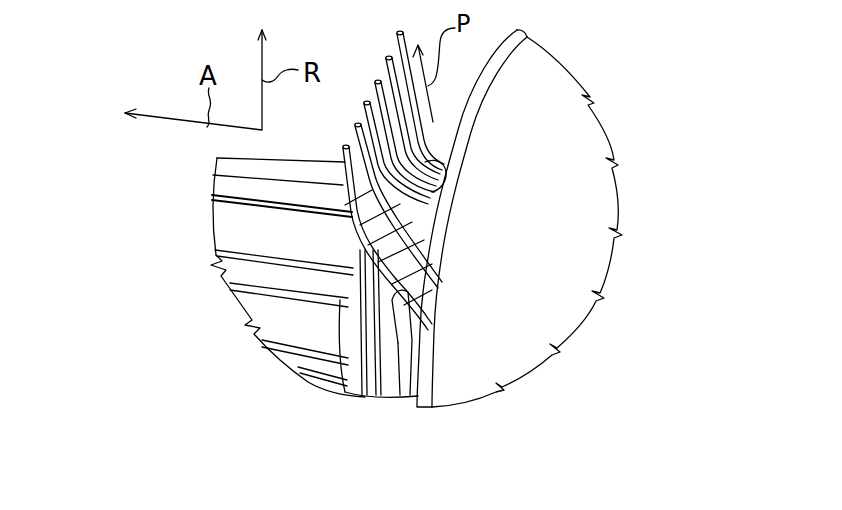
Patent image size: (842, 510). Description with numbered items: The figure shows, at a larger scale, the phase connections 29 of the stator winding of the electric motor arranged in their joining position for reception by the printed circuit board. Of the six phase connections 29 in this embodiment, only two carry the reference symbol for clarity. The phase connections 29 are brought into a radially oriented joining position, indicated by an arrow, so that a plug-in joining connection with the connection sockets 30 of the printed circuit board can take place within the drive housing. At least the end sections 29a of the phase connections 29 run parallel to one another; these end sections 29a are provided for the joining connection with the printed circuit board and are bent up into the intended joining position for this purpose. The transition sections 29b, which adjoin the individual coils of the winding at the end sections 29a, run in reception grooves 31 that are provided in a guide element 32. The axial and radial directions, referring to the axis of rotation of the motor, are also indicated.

The phase connections 29 is at (353, 227).
The end sections 29a is at (343, 160).
The transition sections 29b is at (363, 262).
The reception grooves 31 is at (398, 343).
The guide element 32 is at (383, 360).
The connection sockets 30 is at (600, 270).